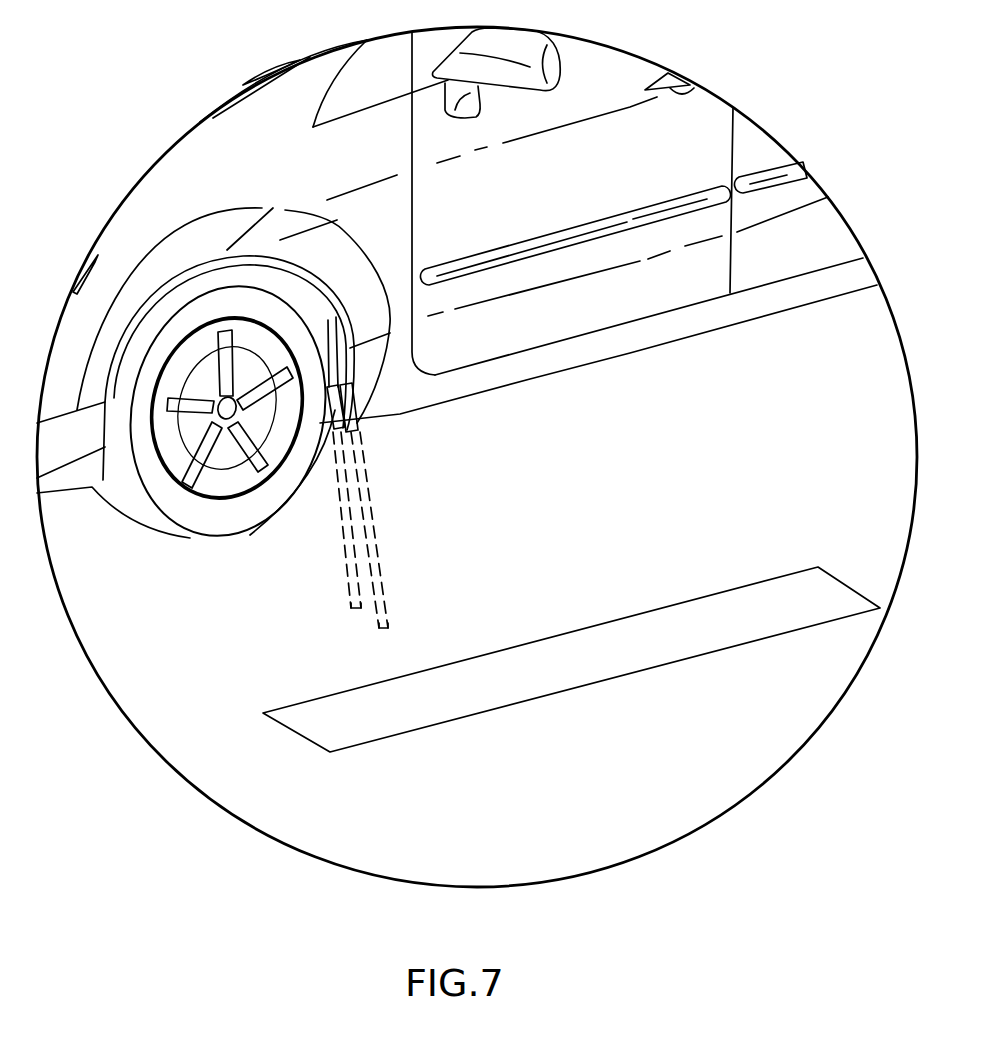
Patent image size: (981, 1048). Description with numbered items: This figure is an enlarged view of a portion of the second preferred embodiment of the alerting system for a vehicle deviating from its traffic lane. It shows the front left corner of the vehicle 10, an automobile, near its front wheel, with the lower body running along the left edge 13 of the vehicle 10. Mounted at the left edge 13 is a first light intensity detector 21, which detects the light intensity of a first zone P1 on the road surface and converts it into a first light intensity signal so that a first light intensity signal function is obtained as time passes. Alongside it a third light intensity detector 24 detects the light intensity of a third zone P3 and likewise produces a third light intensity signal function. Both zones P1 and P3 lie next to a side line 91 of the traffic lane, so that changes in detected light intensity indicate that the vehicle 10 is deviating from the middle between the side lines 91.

The vehicle 10 is at (735, 335).
The left edge 13 is at (483, 393).
The first light intensity detector 21 is at (323, 420).
The third light intensity detector 24 is at (355, 428).
The side line 91 is at (683, 612).
The first zone P1 is at (357, 610).
The third zone P3 is at (380, 630).